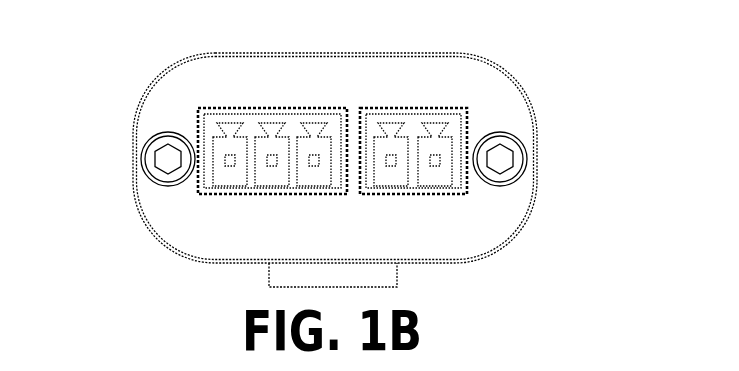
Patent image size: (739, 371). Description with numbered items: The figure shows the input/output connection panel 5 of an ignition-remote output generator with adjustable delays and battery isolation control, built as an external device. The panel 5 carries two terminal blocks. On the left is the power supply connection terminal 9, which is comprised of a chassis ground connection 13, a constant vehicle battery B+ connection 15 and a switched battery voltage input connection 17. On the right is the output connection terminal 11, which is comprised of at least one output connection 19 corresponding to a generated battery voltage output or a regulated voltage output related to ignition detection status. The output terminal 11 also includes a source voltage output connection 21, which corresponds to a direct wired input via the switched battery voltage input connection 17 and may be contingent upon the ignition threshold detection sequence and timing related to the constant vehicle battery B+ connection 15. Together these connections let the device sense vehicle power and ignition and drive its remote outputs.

The input/output connection panel 5 is at (173, 252).
The power supply connection terminal 9 is at (200, 199).
The output connection terminal 11 is at (469, 198).
The chassis ground connection 13 is at (229, 151).
The constant vehicle battery B+ connection 15 is at (271, 151).
The switched battery voltage input connection 17 is at (313, 151).
The output connection 19 is at (398, 153).
The source voltage output connection 21 is at (435, 155).